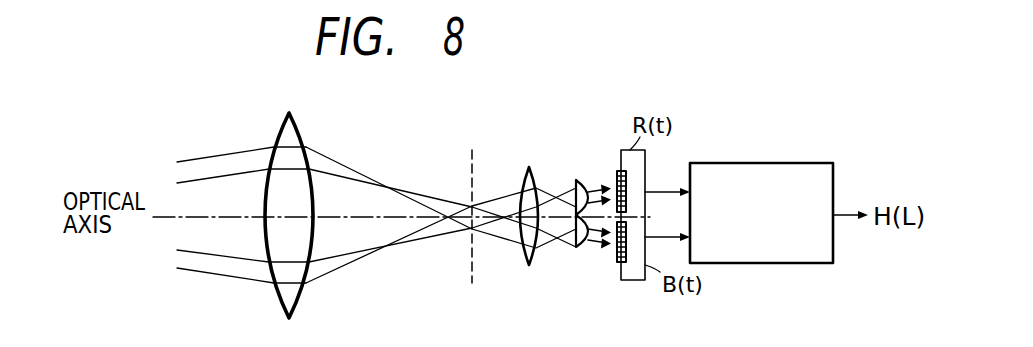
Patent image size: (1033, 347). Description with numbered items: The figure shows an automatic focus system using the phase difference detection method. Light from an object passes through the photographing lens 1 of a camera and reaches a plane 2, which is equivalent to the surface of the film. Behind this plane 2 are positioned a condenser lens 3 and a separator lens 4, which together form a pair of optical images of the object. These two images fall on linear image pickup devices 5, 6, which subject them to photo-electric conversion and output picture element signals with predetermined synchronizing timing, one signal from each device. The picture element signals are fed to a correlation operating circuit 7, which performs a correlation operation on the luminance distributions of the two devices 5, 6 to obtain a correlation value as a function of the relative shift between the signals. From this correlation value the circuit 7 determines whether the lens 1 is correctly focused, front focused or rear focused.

The photographing lens 1 is at (296, 124).
The plane 2 is at (473, 150).
The condenser lens 3 is at (529, 166).
The separator lens 4 is at (577, 180).
The linear image pickup device 5 is at (618, 172).
The linear image pickup device 6 is at (617, 259).
The correlation operating circuit 7 is at (795, 163).